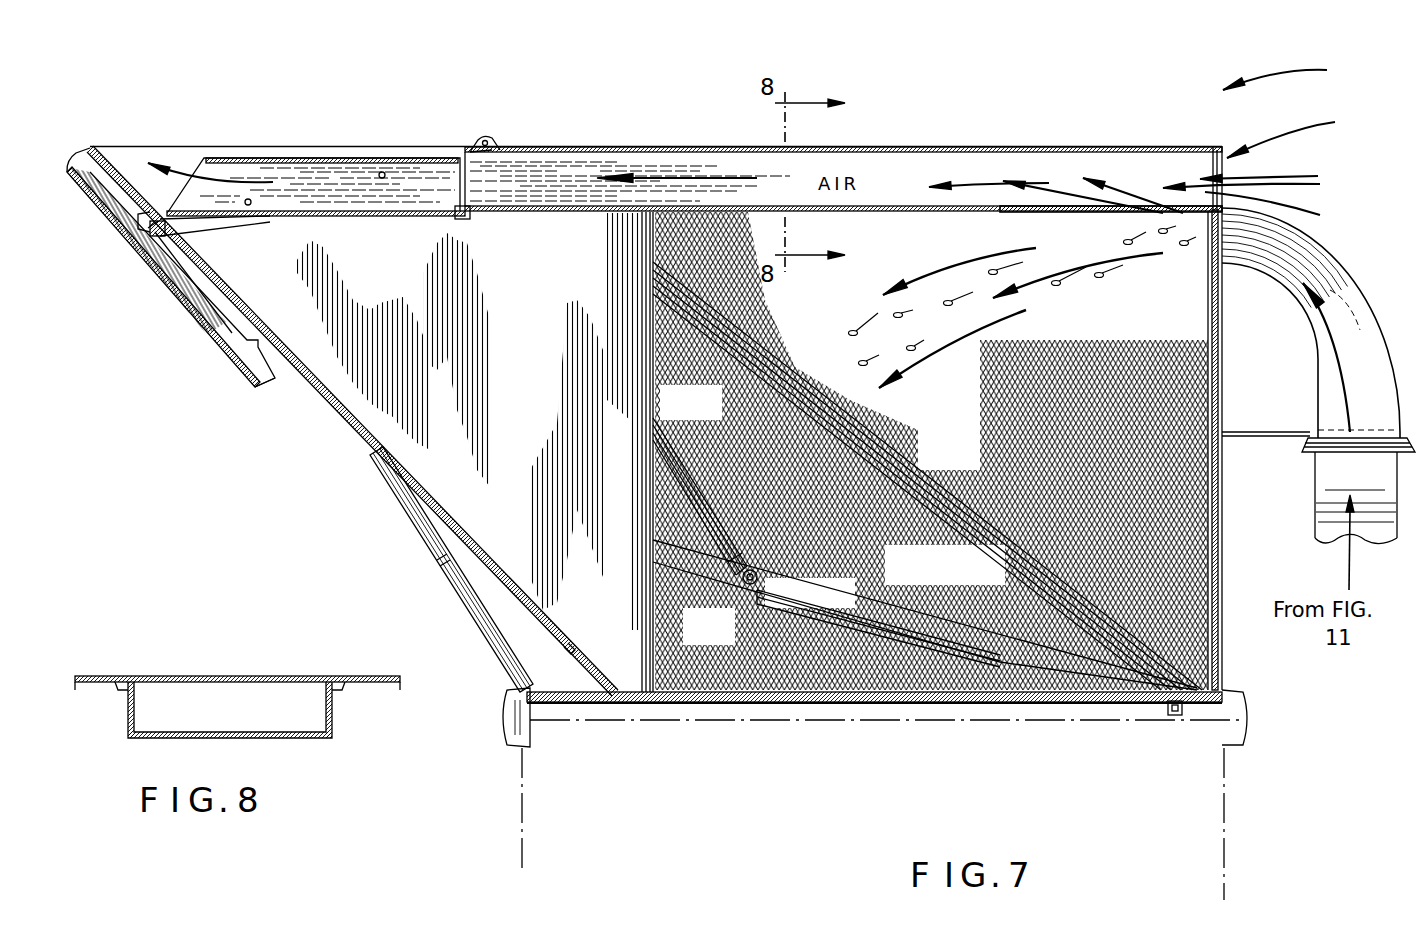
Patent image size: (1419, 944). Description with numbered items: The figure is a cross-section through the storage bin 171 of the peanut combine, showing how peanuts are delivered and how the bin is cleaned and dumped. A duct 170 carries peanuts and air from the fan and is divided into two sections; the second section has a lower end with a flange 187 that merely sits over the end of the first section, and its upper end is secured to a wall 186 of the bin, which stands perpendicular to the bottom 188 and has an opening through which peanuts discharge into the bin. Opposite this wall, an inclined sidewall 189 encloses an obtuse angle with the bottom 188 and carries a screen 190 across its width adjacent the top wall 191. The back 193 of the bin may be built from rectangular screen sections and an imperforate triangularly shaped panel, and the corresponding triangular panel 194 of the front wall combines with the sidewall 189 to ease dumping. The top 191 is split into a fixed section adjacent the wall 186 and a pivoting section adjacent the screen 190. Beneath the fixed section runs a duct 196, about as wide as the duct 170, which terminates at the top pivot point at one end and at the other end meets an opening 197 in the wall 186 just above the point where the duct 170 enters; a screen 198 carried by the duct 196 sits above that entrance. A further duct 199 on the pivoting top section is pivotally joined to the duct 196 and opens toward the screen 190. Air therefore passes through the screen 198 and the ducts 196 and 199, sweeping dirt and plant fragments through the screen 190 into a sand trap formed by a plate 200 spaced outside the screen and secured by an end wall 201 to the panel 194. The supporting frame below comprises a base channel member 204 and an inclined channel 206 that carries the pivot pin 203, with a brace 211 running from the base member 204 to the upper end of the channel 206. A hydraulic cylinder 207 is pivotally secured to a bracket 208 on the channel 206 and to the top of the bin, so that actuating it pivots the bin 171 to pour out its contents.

In FIG. 7, the duct 170 is at (1373, 313).
In FIG. 7, the bin 171 is at (1300, 74).
In FIG. 7, the wall 186 is at (1222, 637).
In FIG. 7, the flange 187 is at (1302, 446).
In FIG. 7, the bottom 188 is at (950, 692).
In FIG. 7, the inclined sidewall 189 is at (354, 423).
In FIG. 7, the screen 190 is at (113, 172).
In FIG. 7, the top wall 191 is at (700, 150).
In FIG. 8, the top wall 191 is at (275, 680).
In FIG. 7, the back 193 is at (985, 445).
In FIG. 7, the triangularly shaped panel 194 is at (533, 395).
In FIG. 7, the duct 196 is at (590, 213).
In FIG. 8, the duct 196 is at (280, 740).
In FIG. 7, the opening 197 is at (1222, 167).
In FIG. 7, the screen 198 is at (1094, 207).
In FIG. 7, the duct 199 is at (370, 214).
In FIG. 7, the plate 200 is at (173, 307).
In FIG. 7, the end wall 201 is at (265, 389).
In FIG. 7, the pin 203 is at (151, 237).
In FIG. 7, the base channel member 204 is at (567, 698).
In FIG. 7, the inclined channel 206 is at (715, 598).
In FIG. 7, the hydraulic cylinder 207 is at (675, 441).
In FIG. 7, the bracket 208 is at (760, 583).
In FIG. 7, the brace 211 is at (976, 545).